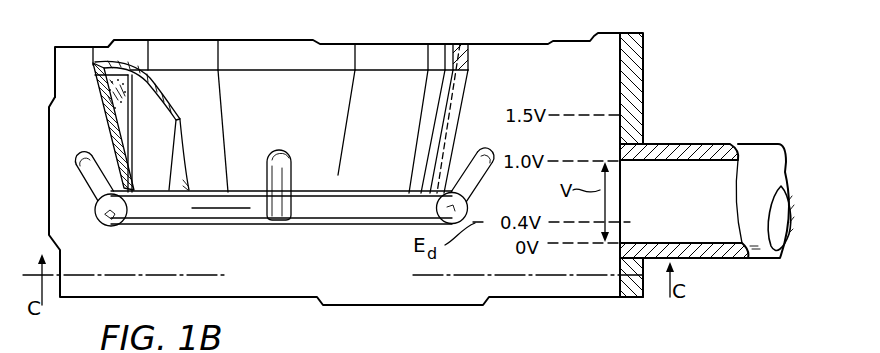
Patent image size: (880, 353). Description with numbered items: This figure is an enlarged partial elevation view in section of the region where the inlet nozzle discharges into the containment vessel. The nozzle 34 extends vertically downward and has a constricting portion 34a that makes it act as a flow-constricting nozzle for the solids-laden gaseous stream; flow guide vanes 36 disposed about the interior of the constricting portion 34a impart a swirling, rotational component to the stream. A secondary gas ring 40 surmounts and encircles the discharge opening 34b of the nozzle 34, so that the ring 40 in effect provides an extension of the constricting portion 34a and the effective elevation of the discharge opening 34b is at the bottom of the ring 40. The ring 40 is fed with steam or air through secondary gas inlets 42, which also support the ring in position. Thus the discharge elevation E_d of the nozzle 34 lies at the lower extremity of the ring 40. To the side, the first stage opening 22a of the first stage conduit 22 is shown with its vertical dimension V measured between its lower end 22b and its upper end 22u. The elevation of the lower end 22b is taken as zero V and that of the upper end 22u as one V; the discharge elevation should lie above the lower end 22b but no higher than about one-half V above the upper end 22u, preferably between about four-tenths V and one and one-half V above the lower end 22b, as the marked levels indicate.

The first stage outlet conduit 22 is at (698, 176).
The first stage opening 22a is at (618, 190).
The upper end of first stage opening 22u is at (616, 162).
The lower end of first stage opening 22b is at (619, 266).
The nozzle 34 is at (326, 55).
The constricting portion 34a is at (332, 168).
The discharge opening 34b is at (393, 199).
The flow guide vanes 36 is at (122, 110).
The secondary gas ring 40 is at (208, 207).
The secondary gas inlets 42 is at (273, 170).